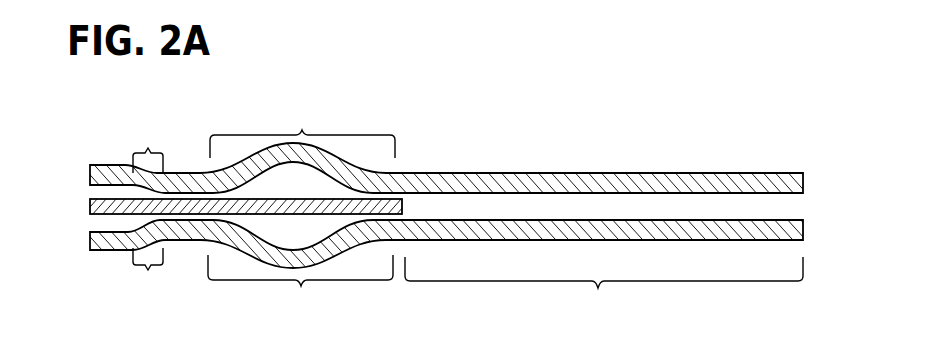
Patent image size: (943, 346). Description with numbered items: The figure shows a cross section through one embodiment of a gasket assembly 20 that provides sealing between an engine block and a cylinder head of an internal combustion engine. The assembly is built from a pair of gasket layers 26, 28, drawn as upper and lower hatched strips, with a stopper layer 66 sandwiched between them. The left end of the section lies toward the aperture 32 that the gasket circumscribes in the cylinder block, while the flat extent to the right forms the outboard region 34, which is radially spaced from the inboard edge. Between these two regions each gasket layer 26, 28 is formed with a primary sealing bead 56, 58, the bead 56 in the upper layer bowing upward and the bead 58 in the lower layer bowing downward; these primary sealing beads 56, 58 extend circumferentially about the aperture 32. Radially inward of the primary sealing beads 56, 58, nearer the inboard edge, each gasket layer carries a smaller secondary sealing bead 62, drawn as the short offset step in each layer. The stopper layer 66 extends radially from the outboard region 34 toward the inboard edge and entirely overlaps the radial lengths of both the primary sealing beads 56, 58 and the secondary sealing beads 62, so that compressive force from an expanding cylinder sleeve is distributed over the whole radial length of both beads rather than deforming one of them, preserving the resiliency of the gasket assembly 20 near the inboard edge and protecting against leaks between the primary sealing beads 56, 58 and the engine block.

The gasket assembly 20 is at (447, 177).
The gasket layer 26 is at (630, 183).
The gasket layer 28 is at (630, 228).
The stopper layer 66 is at (404, 207).
The secondary sealing bead 62 is at (148, 209).
The primary sealing bead 56 is at (302, 133).
The primary sealing bead 58 is at (300, 283).
The outboard region 34 is at (604, 285).
The aperture 32 is at (41, 188).